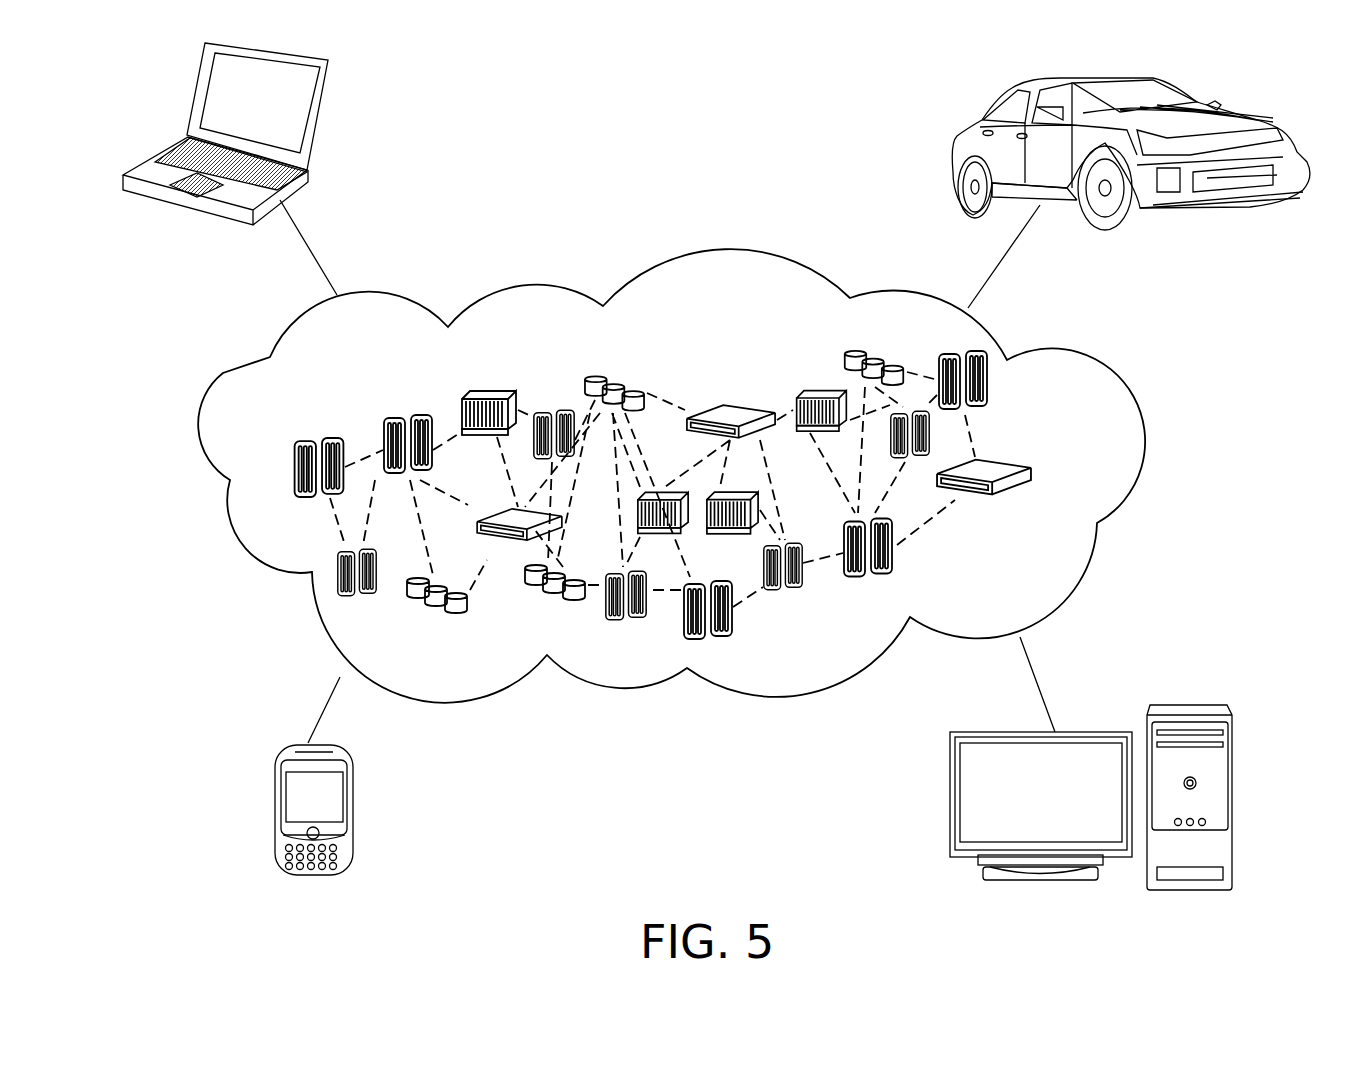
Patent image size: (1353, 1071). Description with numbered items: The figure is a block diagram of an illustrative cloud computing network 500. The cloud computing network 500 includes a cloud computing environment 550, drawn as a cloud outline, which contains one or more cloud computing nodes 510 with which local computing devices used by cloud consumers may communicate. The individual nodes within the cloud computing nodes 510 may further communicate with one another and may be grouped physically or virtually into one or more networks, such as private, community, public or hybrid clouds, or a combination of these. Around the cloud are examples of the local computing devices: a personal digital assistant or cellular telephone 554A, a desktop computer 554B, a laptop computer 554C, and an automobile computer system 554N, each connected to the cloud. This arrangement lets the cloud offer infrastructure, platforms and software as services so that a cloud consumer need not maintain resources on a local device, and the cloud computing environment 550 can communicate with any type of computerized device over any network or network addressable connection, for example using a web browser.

The cloud computing network 500 is at (175, 826).
The cloud computing nodes 510 is at (240, 405).
The cloud computing environment 550 is at (230, 523).
The personal digital assistant or cellular telephone 554A is at (272, 787).
The desktop computer 554B is at (947, 787).
The laptop computer 554C is at (190, 130).
The automobile computer system 554N is at (960, 130).